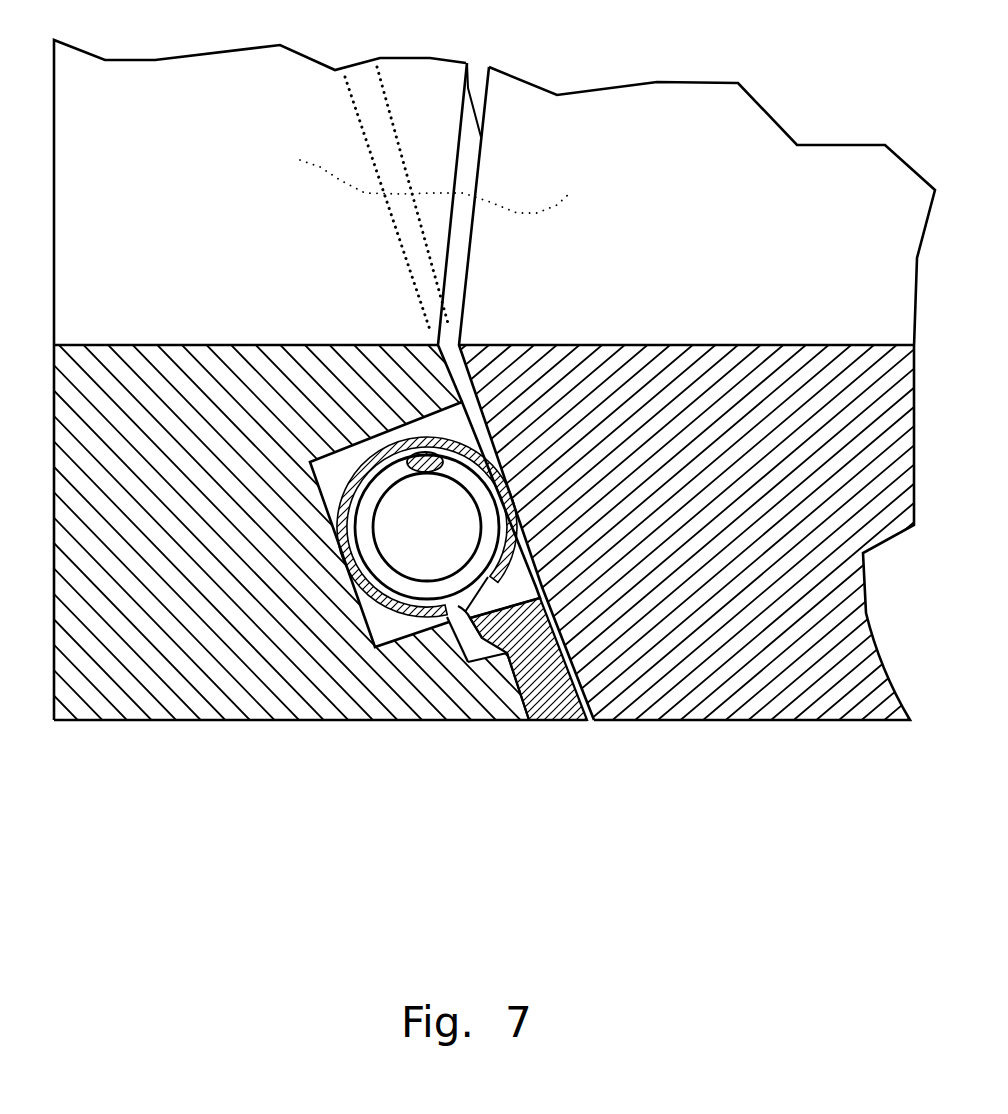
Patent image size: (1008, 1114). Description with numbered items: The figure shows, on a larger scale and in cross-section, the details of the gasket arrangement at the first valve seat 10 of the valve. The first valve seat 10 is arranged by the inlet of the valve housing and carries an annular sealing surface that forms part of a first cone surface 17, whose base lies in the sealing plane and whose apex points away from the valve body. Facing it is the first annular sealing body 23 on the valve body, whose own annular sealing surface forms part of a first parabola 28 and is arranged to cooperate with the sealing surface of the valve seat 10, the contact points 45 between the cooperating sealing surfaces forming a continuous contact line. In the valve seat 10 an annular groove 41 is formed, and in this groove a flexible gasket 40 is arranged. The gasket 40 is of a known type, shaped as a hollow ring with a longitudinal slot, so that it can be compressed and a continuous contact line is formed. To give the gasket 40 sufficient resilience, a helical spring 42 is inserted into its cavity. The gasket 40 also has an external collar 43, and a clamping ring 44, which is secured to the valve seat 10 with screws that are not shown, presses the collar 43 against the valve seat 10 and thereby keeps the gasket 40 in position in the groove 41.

The first valve seat 10 is at (188, 617).
The first annular sealing body 23 is at (688, 647).
The first cone surface 17 is at (358, 198).
The first parabola 28 is at (443, 186).
The flexible gasket 40 is at (387, 437).
The annular groove 41 is at (317, 462).
The helical spring 42 is at (380, 570).
The external collar 43 is at (462, 640).
The clamping ring 44 is at (540, 687).
The contact points 45 is at (525, 500).